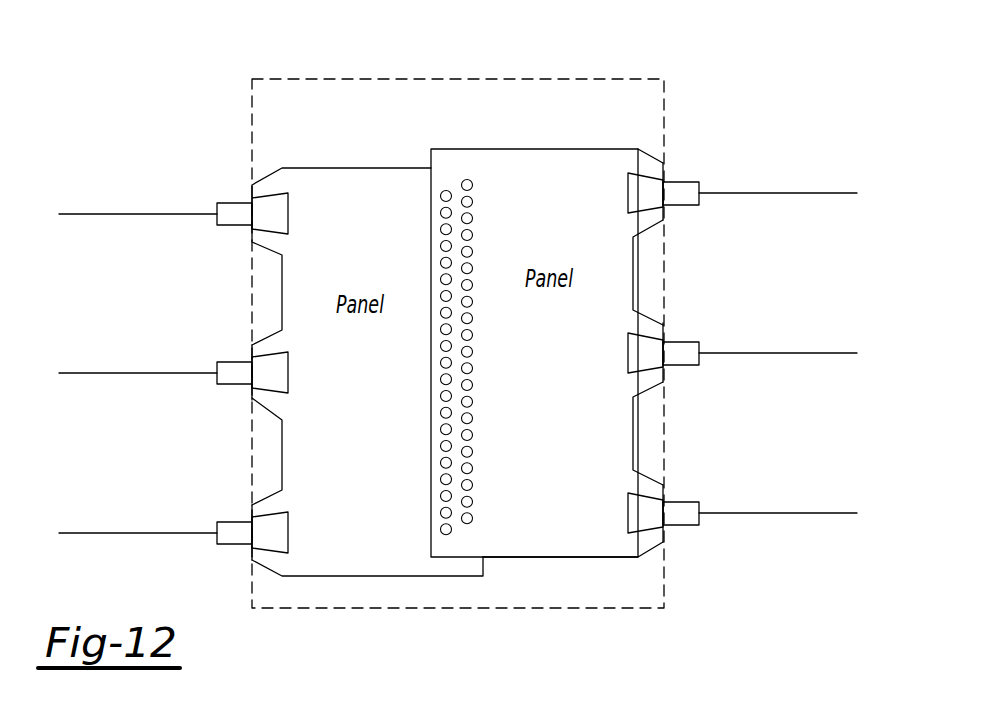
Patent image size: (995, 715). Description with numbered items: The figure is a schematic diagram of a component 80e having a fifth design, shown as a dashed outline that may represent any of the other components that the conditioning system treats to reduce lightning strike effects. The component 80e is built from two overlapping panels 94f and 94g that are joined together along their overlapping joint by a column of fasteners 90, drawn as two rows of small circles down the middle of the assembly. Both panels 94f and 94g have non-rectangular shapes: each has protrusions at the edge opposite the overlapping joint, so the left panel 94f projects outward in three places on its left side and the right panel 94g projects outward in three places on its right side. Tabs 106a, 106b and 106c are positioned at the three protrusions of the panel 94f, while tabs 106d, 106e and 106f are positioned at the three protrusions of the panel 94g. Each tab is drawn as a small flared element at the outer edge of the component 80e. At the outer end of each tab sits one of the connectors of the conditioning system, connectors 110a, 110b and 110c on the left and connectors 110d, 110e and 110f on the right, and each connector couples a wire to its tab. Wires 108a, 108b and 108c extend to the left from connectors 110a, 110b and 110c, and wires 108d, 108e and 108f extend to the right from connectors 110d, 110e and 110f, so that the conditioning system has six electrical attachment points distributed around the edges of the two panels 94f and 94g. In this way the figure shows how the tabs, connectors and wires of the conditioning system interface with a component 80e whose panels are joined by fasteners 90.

The component 80e is at (458, 79).
The fasteners 90 is at (473, 235).
The panel 94f is at (326, 577).
The panel 94g is at (580, 558).
The tab 106a is at (288, 214).
The tab 106b is at (288, 373).
The tab 106c is at (288, 533).
The tab 106d is at (628, 513).
The tab 106e is at (628, 353).
The tab 106f is at (628, 193).
The wire 108a is at (115, 212).
The wire 108b is at (115, 371).
The wire 108c is at (115, 531).
The wire 108d is at (803, 512).
The wire 108e is at (803, 352).
The wire 108f is at (803, 192).
The connector 110a is at (222, 201).
The connector 110b is at (222, 360).
The connector 110c is at (222, 520).
The connector 110d is at (697, 501).
The connector 110e is at (697, 341).
The connector 110f is at (697, 181).